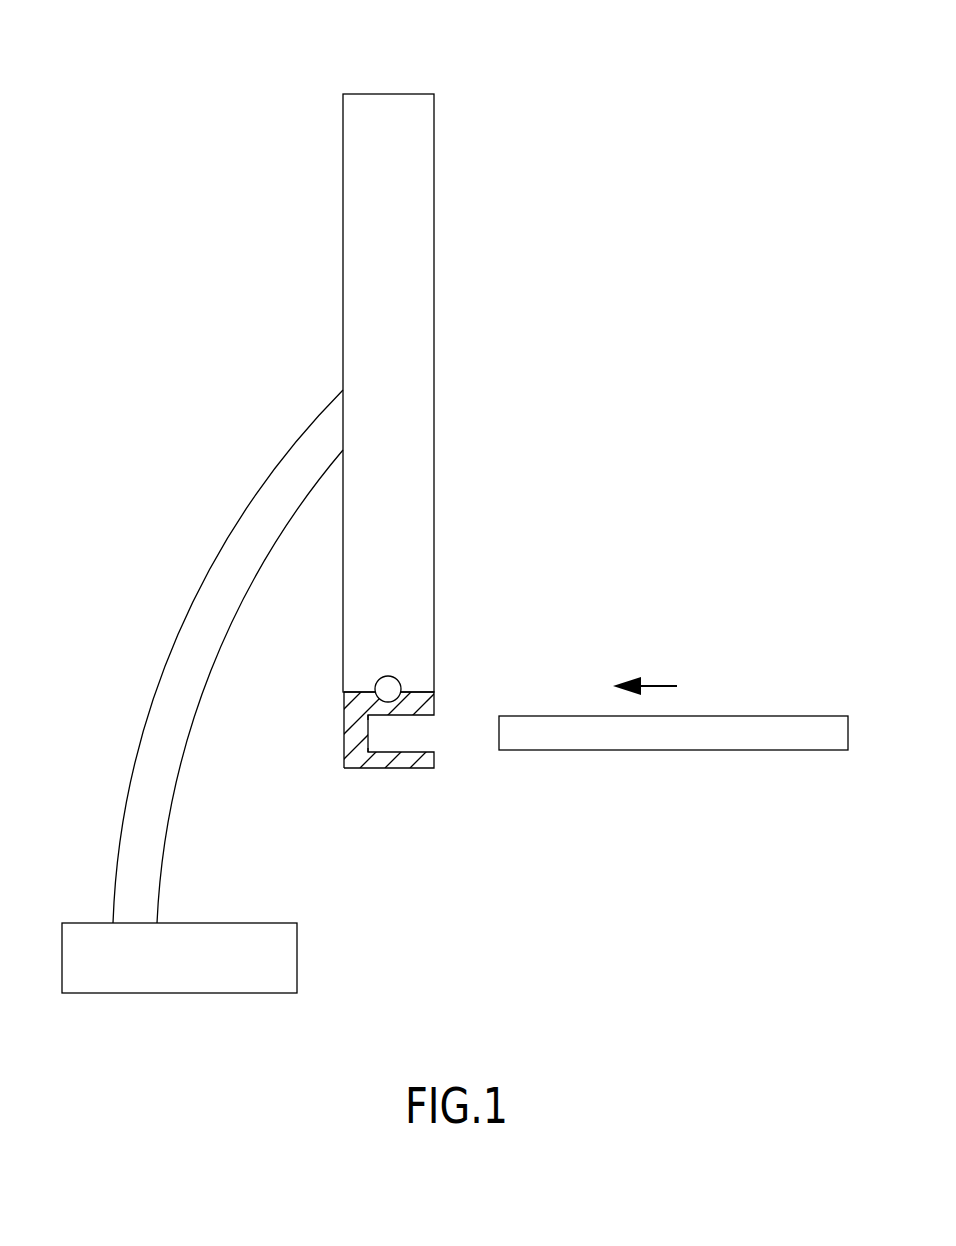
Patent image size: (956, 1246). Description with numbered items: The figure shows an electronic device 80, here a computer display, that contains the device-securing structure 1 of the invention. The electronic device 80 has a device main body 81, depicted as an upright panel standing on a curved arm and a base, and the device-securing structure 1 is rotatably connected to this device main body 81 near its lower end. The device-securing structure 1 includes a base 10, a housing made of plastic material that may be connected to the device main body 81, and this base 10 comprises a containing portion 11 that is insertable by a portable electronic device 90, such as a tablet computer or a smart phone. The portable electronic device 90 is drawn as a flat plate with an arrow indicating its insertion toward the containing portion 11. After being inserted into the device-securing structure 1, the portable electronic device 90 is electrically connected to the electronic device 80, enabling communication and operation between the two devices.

The electronic device 80 is at (288, 500).
The device main body 81 is at (423, 203).
The device-securing structure 1 is at (387, 772).
The containing portion 11 is at (425, 730).
The base 10 is at (423, 770).
The portable electronic device 90 is at (758, 705).